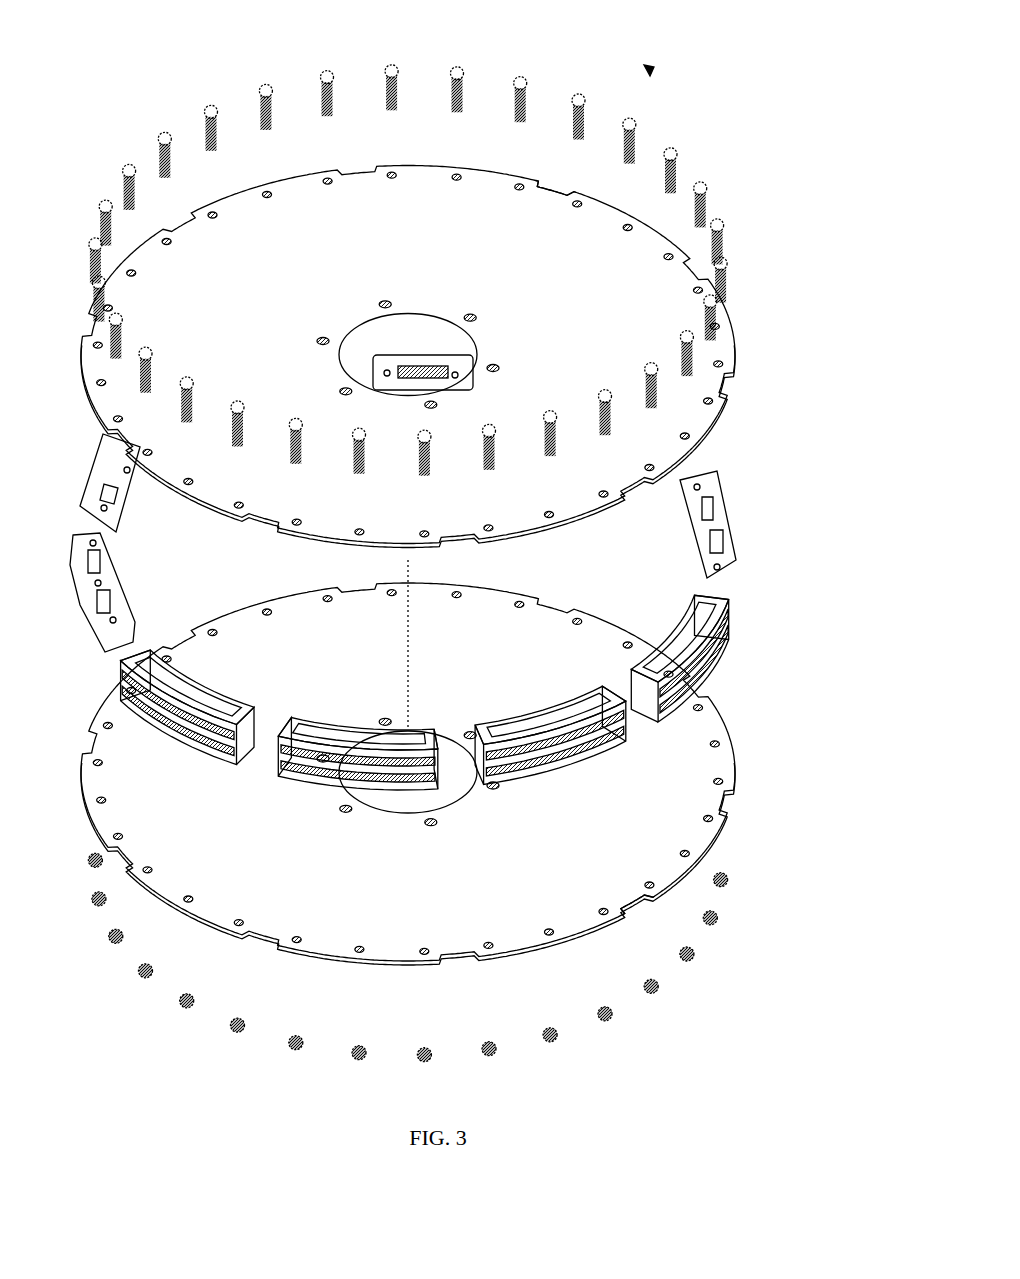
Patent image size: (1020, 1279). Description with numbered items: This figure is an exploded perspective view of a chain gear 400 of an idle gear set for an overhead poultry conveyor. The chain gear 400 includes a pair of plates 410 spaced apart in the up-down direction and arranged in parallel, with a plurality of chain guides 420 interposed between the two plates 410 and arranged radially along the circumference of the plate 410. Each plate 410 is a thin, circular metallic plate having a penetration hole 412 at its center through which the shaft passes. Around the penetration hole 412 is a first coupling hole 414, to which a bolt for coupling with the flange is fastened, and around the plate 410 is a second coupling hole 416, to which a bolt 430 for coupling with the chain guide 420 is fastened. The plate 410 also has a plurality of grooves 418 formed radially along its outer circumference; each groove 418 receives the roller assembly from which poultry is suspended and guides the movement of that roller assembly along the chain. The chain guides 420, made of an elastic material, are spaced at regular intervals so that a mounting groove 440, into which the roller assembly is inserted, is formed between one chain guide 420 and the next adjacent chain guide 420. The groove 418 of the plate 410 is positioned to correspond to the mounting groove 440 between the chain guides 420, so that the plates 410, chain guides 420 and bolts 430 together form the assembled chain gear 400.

The chain gear 400 is at (434, 535).
The plate 410 is at (437, 566).
The penetration hole 412 is at (408, 566).
The first coupling hole 414 is at (414, 571).
The second coupling hole 416 is at (407, 581).
The groove 418 is at (599, 550).
The chain guide 420 is at (434, 578).
The bolt 430 is at (408, 270).
The mounting groove 440 is at (460, 720).